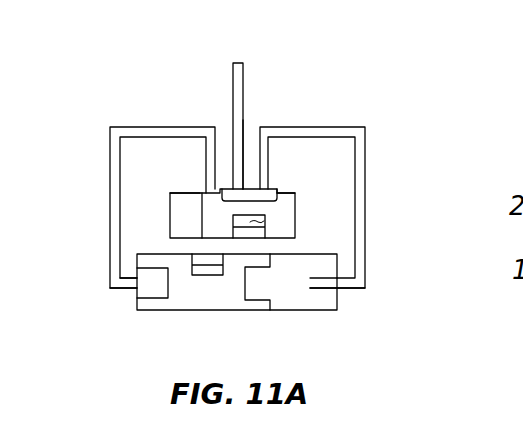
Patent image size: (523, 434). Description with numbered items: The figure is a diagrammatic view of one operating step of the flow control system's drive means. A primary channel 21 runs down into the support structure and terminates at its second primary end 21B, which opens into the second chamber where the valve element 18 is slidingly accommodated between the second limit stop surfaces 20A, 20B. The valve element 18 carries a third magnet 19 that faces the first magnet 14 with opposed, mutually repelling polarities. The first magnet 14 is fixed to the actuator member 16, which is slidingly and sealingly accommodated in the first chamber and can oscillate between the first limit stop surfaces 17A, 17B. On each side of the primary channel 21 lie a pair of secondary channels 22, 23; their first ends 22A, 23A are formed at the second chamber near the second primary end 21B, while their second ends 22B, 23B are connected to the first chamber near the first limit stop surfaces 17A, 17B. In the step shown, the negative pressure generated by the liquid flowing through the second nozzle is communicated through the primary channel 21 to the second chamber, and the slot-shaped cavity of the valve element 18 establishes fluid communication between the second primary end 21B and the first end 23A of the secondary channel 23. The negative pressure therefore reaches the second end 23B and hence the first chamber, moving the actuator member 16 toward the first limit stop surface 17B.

The first magnet 14 is at (212, 275).
The actuator member 16 is at (190, 297).
The first limit stop surface 17A is at (137, 257).
The first limit stop surface 17B is at (335, 298).
The valve element 18 is at (212, 219).
The third magnet 19 is at (266, 221).
The second limit stop surface 20A is at (170, 193).
The second limit stop surface 20B is at (295, 191).
The primary channel 21 is at (238, 83).
The second primary end 21B is at (245, 172).
The secondary channel 22 is at (177, 133).
The first end of secondary channel 22A is at (210, 182).
The second end of secondary channel 22B is at (143, 284).
The secondary channel 23 is at (328, 130).
The first end of secondary channel 23A is at (263, 182).
The second end of secondary channel 23B is at (322, 283).